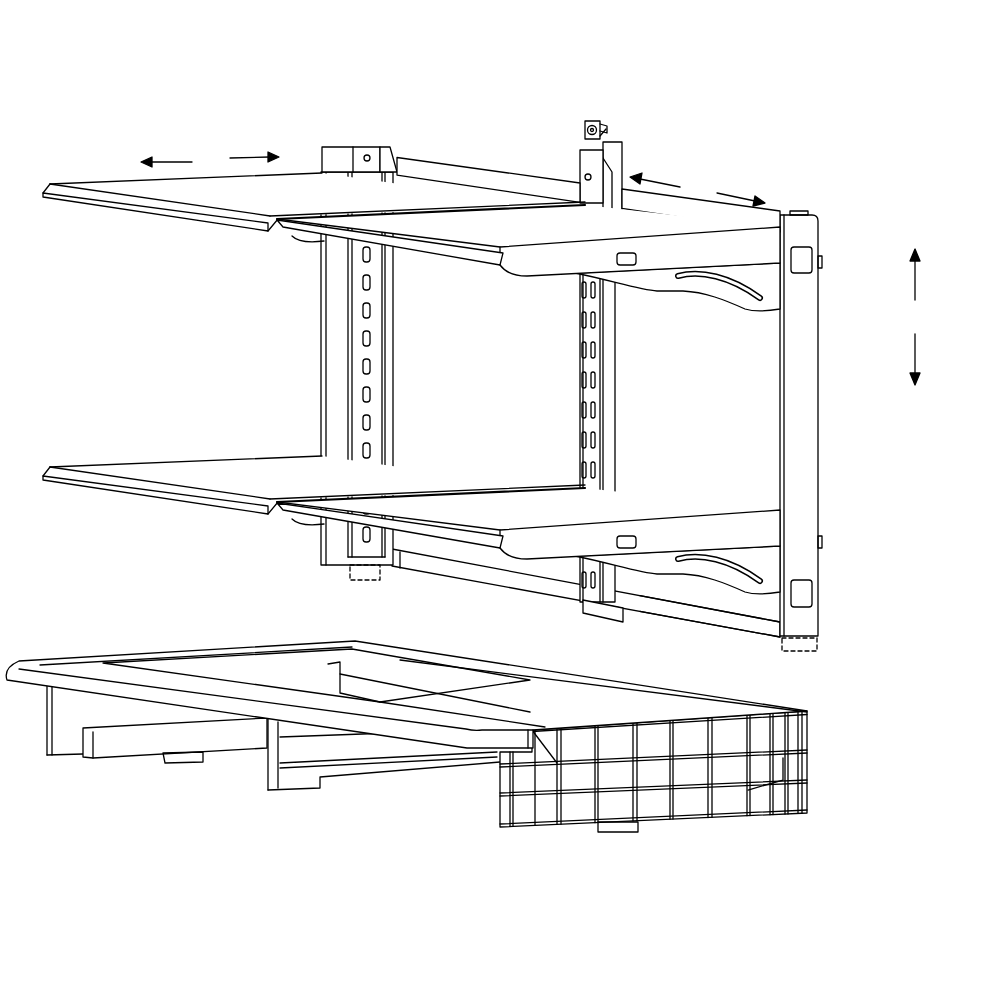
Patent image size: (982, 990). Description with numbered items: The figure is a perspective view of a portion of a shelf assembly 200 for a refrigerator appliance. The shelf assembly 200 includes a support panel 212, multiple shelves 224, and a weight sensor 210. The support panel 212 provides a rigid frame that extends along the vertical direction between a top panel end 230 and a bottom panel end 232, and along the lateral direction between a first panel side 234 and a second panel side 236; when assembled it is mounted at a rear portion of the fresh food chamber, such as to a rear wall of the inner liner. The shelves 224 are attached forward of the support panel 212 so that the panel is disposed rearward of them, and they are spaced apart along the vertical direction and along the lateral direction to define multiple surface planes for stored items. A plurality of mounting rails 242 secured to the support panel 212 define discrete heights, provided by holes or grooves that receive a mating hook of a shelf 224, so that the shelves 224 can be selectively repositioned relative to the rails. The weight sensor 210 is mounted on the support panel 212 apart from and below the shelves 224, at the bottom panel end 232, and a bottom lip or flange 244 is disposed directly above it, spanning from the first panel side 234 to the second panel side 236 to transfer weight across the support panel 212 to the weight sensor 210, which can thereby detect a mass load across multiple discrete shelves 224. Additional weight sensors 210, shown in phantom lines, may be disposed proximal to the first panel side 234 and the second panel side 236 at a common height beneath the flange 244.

The shelf assembly 200 is at (66, 84).
The weight sensor 210 is at (355, 578).
The support panel 212 is at (437, 165).
The shelves 224 is at (163, 208).
The top panel end 230 is at (410, 150).
The bottom panel end 232 is at (773, 637).
The first panel side 234 is at (316, 349).
The second panel side 236 is at (828, 427).
The mounting rails 242 is at (375, 354).
The bottom lip or flange 244 is at (408, 563).